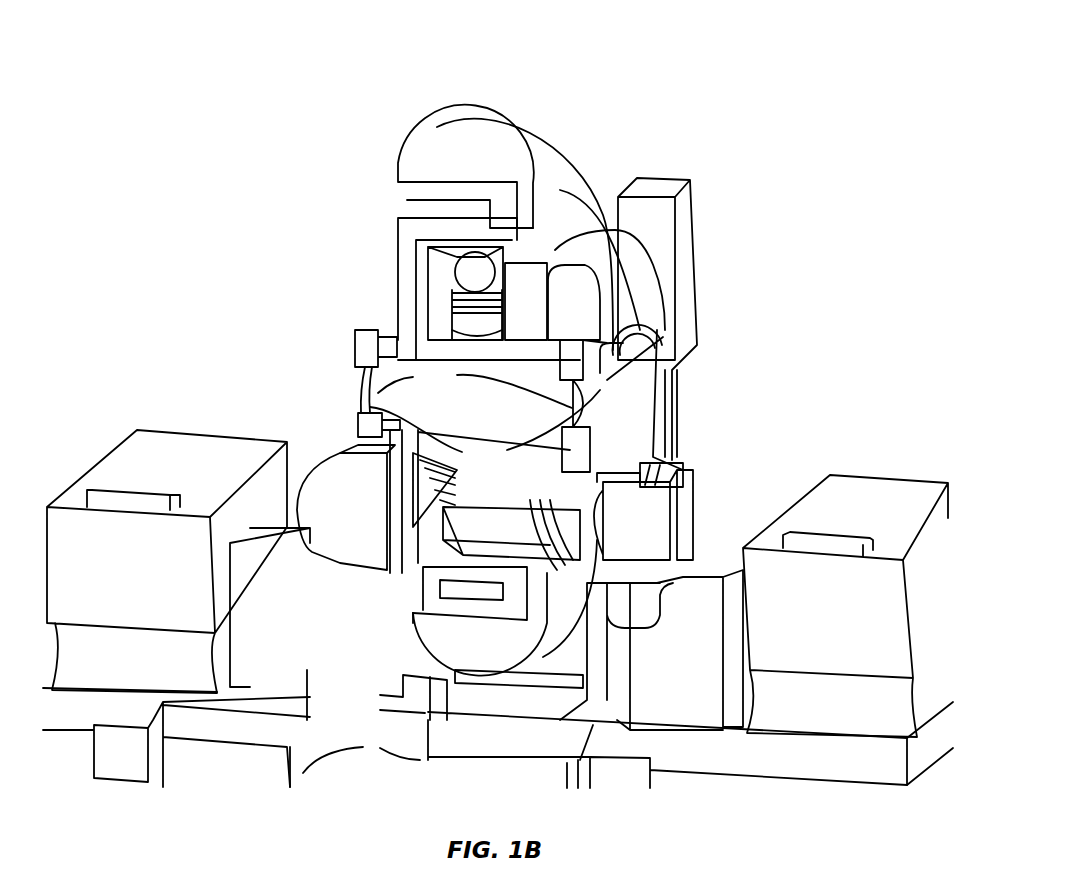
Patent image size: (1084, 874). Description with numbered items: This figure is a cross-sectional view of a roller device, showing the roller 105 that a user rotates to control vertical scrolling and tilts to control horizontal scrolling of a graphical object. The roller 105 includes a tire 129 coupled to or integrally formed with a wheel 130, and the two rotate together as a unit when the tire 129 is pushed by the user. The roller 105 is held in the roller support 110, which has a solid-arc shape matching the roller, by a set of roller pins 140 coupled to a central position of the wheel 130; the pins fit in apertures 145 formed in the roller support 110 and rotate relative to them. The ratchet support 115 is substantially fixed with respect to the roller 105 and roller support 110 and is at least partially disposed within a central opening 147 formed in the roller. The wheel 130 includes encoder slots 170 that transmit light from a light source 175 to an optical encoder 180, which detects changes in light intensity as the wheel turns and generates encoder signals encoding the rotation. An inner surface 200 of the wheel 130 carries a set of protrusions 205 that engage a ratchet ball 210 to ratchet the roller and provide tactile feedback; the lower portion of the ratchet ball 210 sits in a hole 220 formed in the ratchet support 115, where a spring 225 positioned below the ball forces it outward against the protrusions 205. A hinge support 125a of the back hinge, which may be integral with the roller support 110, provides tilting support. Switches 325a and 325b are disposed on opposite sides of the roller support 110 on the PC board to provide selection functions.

The roller 105 is at (600, 153).
The roller support 110 is at (652, 411).
The ratchet support 115 is at (587, 326).
The hinge support 125a is at (665, 281).
The tire 129 is at (476, 162).
The wheel 130 is at (412, 192).
The roller pins 140 is at (463, 383).
The apertures 145 is at (485, 427).
The central opening 147 is at (483, 517).
The encoder slots 170 is at (459, 478).
The light source 175 is at (652, 547).
The optical encoder 180 is at (367, 524).
The inner surface 200 is at (547, 513).
The protrusions 205 is at (478, 527).
The ratchet ball 210 is at (542, 292).
The hole 220 is at (478, 338).
The spring 225 is at (494, 318).
The switch 325a is at (864, 637).
The switch 325b is at (159, 581).